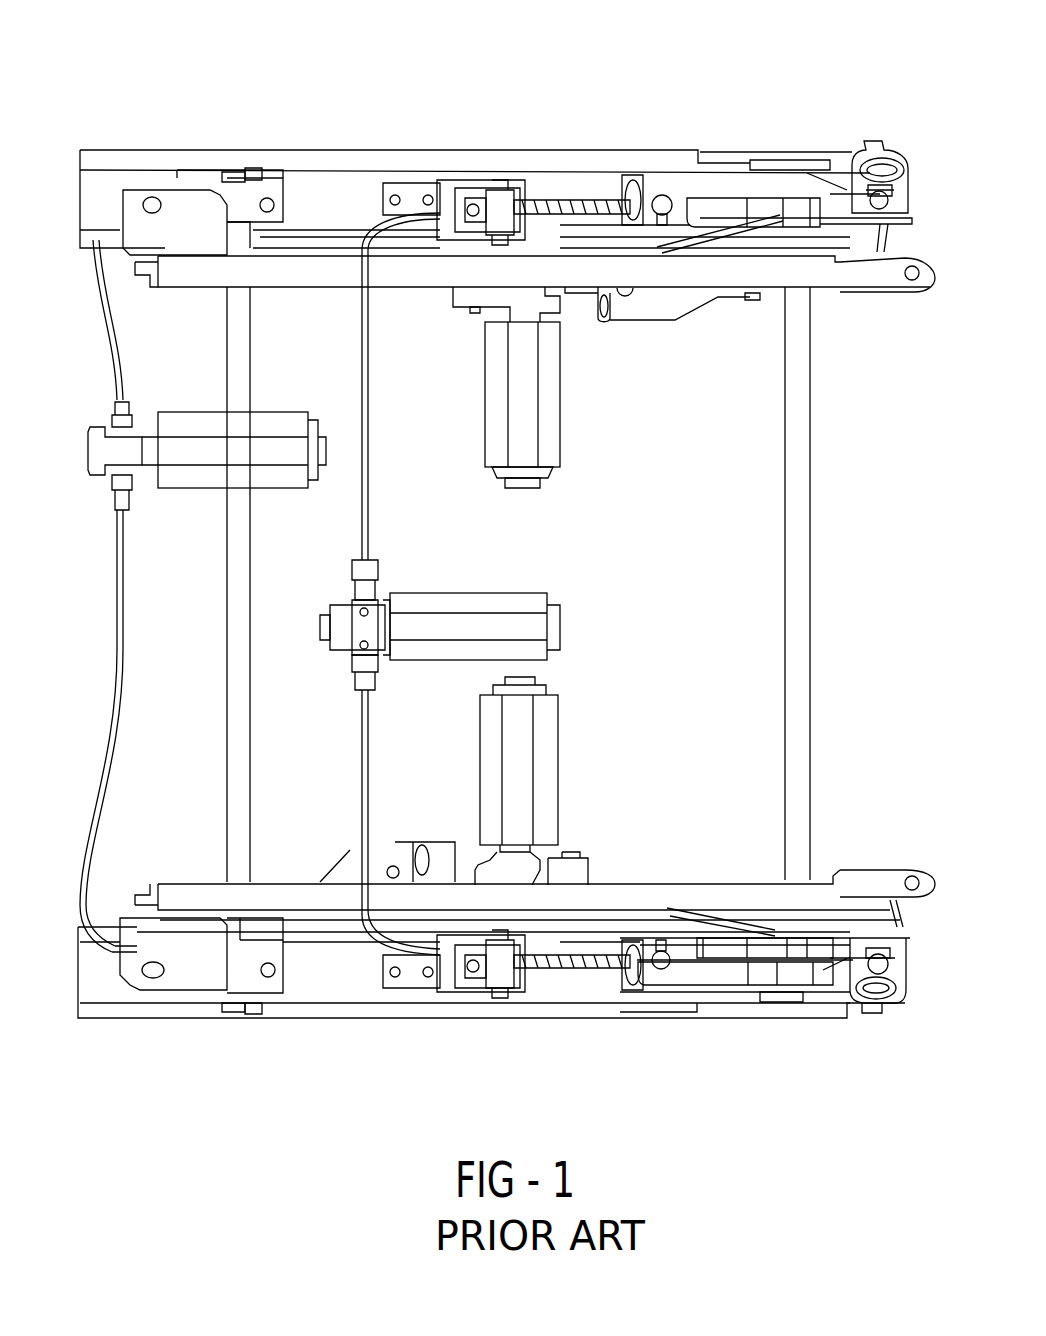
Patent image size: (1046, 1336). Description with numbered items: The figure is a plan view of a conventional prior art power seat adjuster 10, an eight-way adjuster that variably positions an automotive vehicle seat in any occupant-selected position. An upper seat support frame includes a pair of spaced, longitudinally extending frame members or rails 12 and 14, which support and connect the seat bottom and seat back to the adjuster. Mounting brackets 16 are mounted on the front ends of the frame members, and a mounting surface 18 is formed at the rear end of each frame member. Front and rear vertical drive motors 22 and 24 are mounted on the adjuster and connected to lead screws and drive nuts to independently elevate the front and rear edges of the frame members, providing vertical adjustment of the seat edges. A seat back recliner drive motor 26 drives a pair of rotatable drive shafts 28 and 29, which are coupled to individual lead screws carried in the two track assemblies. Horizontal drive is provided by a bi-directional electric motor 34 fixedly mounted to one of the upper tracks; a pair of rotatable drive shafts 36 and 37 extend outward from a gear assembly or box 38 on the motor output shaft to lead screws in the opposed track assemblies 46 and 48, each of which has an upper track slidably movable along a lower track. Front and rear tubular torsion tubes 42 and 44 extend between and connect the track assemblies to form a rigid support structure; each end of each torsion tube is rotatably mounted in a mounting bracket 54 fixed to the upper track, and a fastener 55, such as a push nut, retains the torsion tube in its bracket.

The power seat adjuster 10 is at (493, 35).
The frame member 12 is at (568, 266).
The frame member 14 is at (655, 885).
The mounting bracket 16 is at (150, 188).
The mounting surface 18 is at (866, 278).
The front vertical drive motor 22 is at (555, 453).
The rear vertical drive motor 24 is at (553, 748).
The seat back recliner drive motor 26 is at (533, 602).
The rotatable drive shaft 28 is at (368, 772).
The rotatable drive shaft 29 is at (368, 502).
The bi-directional electric motor 34 is at (268, 475).
The rotatable drive shaft 36 is at (124, 640).
The rotatable drive shaft 37 is at (120, 330).
The gear assembly 38 is at (122, 478).
The front torsion tube 42 is at (252, 748).
The rear torsion tube 44 is at (805, 622).
The track assembly 46 is at (360, 148).
The track assembly 48 is at (305, 1018).
The mounting bracket 54 is at (252, 168).
The fastener 55 is at (232, 168).